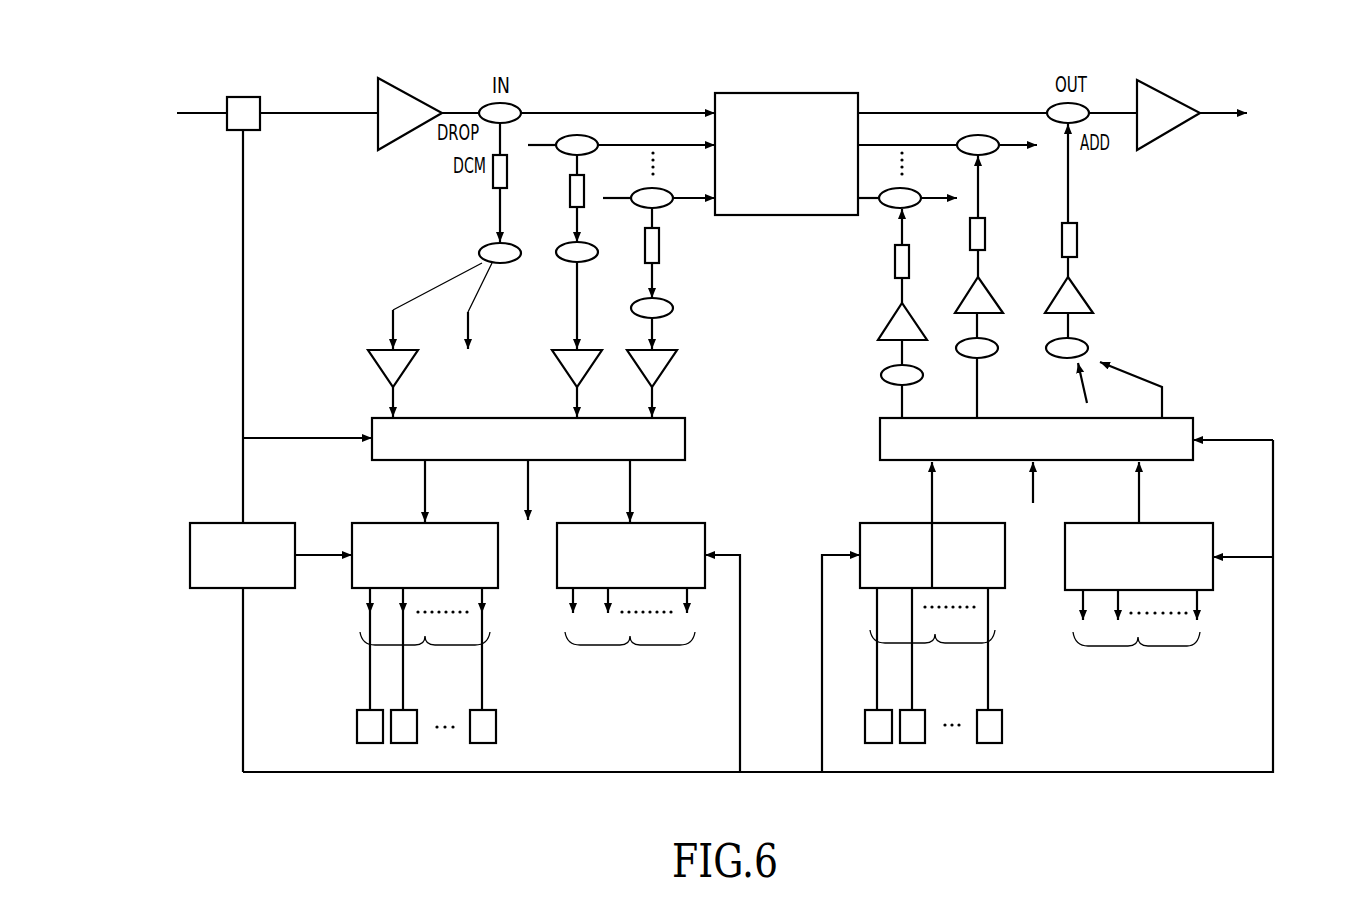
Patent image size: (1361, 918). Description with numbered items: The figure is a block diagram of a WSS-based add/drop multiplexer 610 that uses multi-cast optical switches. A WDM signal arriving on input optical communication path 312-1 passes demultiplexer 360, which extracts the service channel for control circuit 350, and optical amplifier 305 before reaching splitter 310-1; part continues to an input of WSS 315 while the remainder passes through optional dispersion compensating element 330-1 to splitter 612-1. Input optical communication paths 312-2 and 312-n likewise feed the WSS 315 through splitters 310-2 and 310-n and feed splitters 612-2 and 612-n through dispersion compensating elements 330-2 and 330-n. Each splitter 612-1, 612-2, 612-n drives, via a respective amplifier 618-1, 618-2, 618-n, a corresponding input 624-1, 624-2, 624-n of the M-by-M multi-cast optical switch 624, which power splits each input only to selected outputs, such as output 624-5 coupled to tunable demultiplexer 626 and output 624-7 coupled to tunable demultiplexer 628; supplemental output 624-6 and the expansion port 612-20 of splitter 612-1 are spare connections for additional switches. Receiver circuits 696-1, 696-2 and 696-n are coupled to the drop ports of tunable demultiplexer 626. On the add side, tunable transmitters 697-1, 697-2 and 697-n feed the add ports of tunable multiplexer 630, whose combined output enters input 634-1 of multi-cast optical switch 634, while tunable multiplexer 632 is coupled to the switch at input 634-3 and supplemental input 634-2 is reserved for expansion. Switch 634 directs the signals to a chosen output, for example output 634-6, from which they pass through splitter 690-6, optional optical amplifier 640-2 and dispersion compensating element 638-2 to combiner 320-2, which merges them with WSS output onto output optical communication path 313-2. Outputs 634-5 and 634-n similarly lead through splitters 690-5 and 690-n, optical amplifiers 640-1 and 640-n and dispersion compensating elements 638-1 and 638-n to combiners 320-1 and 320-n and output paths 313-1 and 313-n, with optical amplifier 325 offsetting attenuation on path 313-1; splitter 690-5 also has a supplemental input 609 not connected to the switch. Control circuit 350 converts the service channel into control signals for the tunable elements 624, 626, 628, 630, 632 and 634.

The demultiplexer 360 is at (240, 97).
The optical amplifier 305 is at (378, 84).
The splitter 310-1 is at (487, 106).
The splitter 310-2 is at (578, 134).
The splitter 310-n is at (674, 203).
The input optical communication path 312-1 is at (635, 113).
The input optical communication path 312-2 is at (683, 144).
The input optical communication path 312-n is at (605, 200).
The WSS 315 is at (762, 93).
The output optical communication path 313-1 is at (968, 112).
The output optical communication path 313-2 is at (873, 143).
The output optical communication path 313-n is at (938, 195).
The optical combiner 320-1 is at (1090, 108).
The combiner 320-2 is at (1000, 133).
The combiner 320-n is at (888, 207).
The optical amplifier 325 is at (1170, 135).
The dispersion compensating element 330-1 is at (493, 185).
The dispersion compensating element 330-2 is at (568, 203).
The dispersion compensating element 330-n is at (661, 248).
The splitter 612-1 is at (480, 250).
The splitter 612-2 is at (570, 264).
The splitter 612-n is at (670, 315).
The supplemental output or expansion port 612-20 is at (466, 318).
The amplifier 618-1 is at (383, 372).
The amplifier 618-2 is at (563, 373).
The amplifier 618-n is at (665, 370).
The multi-cast switch input 624-1 is at (393, 408).
The multi-cast switch input 624-2 is at (577, 412).
The multi-cast switch input 624-n is at (655, 412).
The multi-cast optical switch 624 is at (687, 438).
The output 624-5 is at (423, 472).
The supplemental output 624-6 is at (527, 483).
The output 624-7 is at (632, 482).
The tunable demultiplexer 626 is at (352, 575).
The tunable demultiplexer 628 is at (707, 532).
The tunable multiplexer or combiner 630 is at (1005, 587).
The tunable multiplexer 632 is at (1215, 585).
The multi-cast optical switch 634 is at (1193, 425).
The input 634-1 is at (932, 510).
The supplemental input 634-2 is at (1033, 497).
The multi-cast switch input 634-3 is at (1139, 503).
The output 634-5 is at (1162, 387).
The output 634-6 is at (977, 390).
The output 634-n is at (898, 402).
The combiner input 609 is at (1088, 400).
The splitter 690-n is at (895, 367).
The splitter 690-6 is at (995, 356).
The splitter 690-5 is at (1082, 345).
The optical amplifier 640-n is at (883, 330).
The optical amplifier 640-2 is at (1027, 281).
The optical amplifier 640-1 is at (1077, 283).
The dispersion compensating element 638-n is at (895, 258).
The dispersion compensating element 638-2 is at (985, 222).
The dispersion compensating element 638-1 is at (1077, 222).
The control circuit 350 is at (205, 522).
The receiver circuit 696-1 is at (357, 726).
The receiver circuit 696-2 is at (404, 743).
The receiver circuit 696-n is at (496, 725).
The tunable transmitter 697-1 is at (877, 743).
The tunable transmitter 697-2 is at (915, 743).
The tunable transmitter 697-n is at (1002, 725).
The add/drop multiplexer 610 is at (1178, 799).